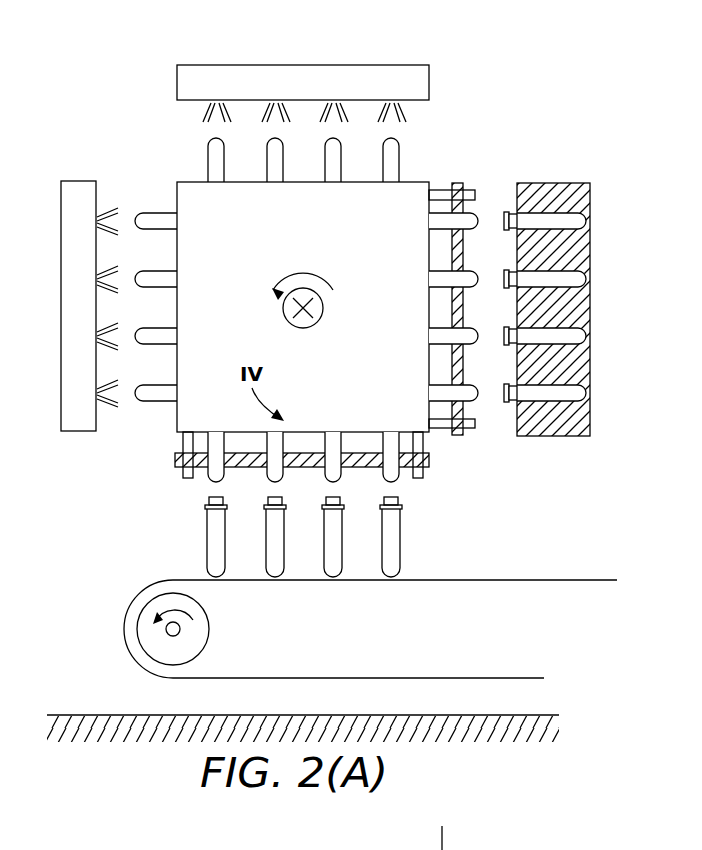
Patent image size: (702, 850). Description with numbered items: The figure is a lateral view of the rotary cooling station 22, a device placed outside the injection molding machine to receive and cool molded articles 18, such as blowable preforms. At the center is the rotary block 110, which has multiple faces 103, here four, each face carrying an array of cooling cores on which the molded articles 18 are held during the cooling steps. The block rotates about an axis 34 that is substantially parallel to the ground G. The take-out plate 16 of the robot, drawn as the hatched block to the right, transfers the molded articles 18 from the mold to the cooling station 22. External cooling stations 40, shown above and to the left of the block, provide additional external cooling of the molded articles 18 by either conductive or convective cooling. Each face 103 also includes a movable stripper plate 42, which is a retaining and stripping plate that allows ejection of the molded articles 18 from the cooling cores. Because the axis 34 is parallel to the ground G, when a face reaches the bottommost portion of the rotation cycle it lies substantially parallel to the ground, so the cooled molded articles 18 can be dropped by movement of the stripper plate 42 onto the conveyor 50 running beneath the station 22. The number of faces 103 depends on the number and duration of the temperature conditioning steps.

The rotary block 110 is at (260, 231).
The external cooling station 40 is at (216, 65).
The stripper plate 42 is at (458, 182).
The take-out plate 16 is at (590, 343).
The rotary cooling station 22 is at (184, 417).
The molded articles 18 is at (207, 160).
The faces 103 is at (177, 256).
The axis 34 is at (323, 312).
The conveyor 50 is at (140, 665).
The ground G is at (546, 717).